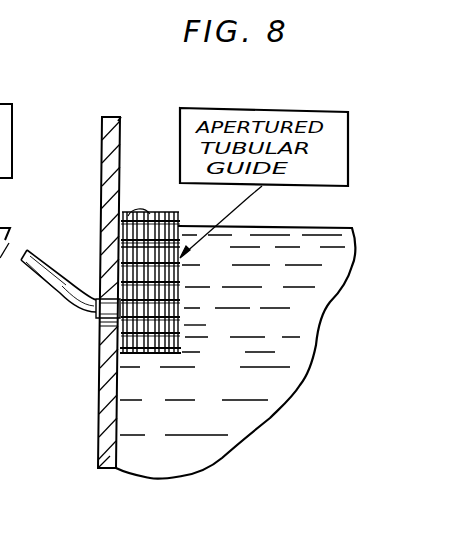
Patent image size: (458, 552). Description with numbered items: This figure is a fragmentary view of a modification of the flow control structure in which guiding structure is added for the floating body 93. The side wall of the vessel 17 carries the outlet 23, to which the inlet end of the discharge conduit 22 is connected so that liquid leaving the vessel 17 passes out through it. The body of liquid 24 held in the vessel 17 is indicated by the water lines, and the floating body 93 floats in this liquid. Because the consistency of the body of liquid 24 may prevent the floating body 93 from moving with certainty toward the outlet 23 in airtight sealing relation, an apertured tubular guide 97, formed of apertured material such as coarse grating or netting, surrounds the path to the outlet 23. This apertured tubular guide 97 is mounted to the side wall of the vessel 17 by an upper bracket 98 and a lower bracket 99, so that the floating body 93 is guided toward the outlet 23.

The vessel 17 is at (100, 459).
The discharge conduit 22 is at (38, 283).
The outlet 23 is at (98, 335).
The body of liquid 24 is at (143, 418).
The floating body 93 is at (146, 212).
The apertured tubular guide 97 is at (176, 345).
The bracket 98 is at (122, 244).
The bracket 99 is at (100, 367).